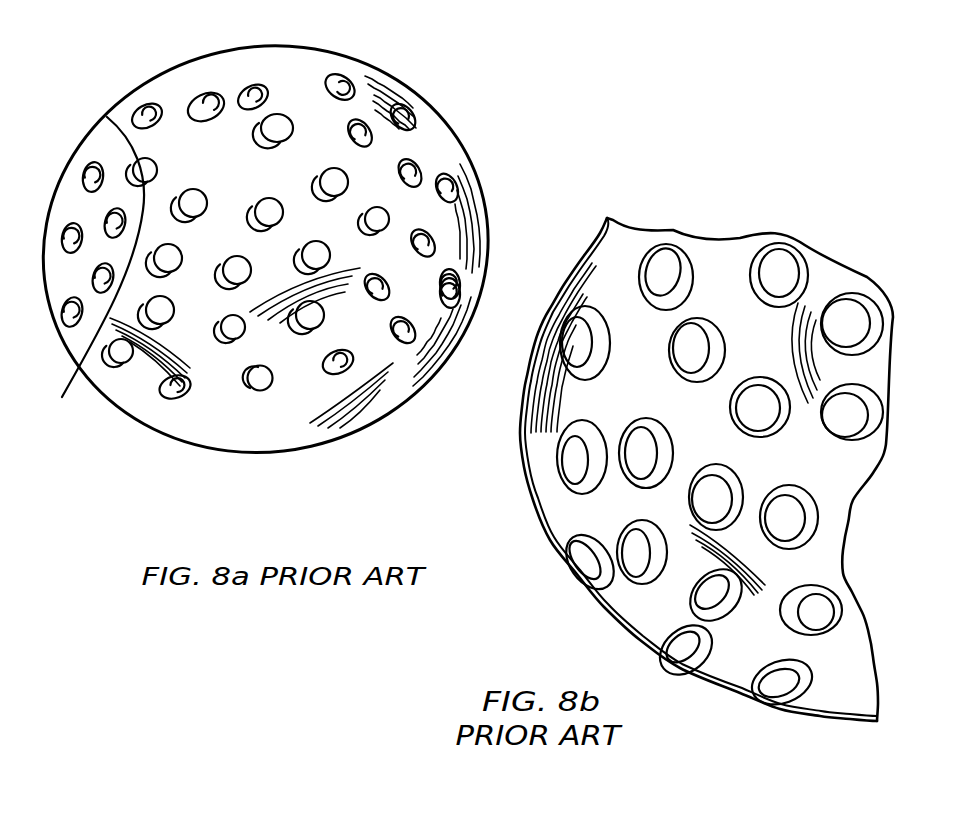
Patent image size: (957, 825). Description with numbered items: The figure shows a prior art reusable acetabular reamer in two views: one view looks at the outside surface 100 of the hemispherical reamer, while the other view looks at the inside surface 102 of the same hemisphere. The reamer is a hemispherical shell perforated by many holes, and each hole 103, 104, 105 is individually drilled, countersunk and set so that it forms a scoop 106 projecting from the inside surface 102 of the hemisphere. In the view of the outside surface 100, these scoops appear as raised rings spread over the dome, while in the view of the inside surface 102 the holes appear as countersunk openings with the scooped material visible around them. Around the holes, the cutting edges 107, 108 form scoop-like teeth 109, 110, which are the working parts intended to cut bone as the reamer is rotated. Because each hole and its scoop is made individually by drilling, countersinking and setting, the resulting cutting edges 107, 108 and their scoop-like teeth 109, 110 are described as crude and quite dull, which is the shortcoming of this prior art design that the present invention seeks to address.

In FIG. 8a, the outside surface 100 is at (190, 160).
In FIG. 8b, the inside surface 102 is at (723, 270).
In FIG. 8a, the hole 103 is at (162, 324).
In FIG. 8b, the hole 103 is at (668, 358).
In FIG. 8a, the hole 104 is at (272, 388).
In FIG. 8b, the hole 104 is at (562, 468).
In FIG. 8a, the hole 105 is at (434, 240).
In FIG. 8b, the hole 105 is at (800, 615).
In FIG. 8a, the scoop 106 is at (103, 156).
In FIG. 8a, the cutting edge 107 is at (92, 271).
In FIG. 8a, the cutting edge 108 is at (122, 356).
In FIG. 8a, the scoop-like tooth 109 is at (186, 193).
In FIG. 8a, the scoop-like tooth 110 is at (247, 387).